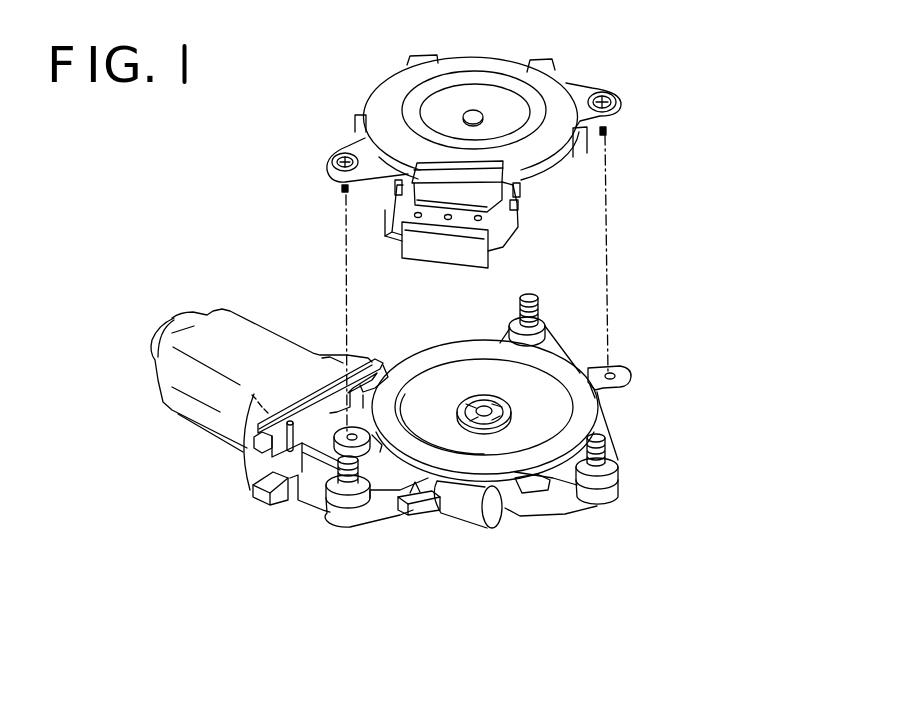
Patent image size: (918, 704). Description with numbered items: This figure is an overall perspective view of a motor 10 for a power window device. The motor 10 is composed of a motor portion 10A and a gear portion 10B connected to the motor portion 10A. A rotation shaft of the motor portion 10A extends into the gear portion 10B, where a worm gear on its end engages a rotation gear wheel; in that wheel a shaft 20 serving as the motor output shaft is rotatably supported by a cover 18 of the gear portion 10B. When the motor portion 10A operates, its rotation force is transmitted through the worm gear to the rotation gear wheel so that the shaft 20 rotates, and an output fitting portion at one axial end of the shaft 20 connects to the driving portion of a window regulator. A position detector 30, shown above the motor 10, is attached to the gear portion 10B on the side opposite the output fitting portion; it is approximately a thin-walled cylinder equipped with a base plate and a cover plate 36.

The motor 10 is at (350, 572).
The motor portion 10A is at (215, 452).
The gear portion 10B is at (437, 528).
The cover 18 is at (530, 515).
The shaft 20 is at (482, 410).
The position detector 30 is at (559, 46).
The cover plate 36 is at (390, 90).